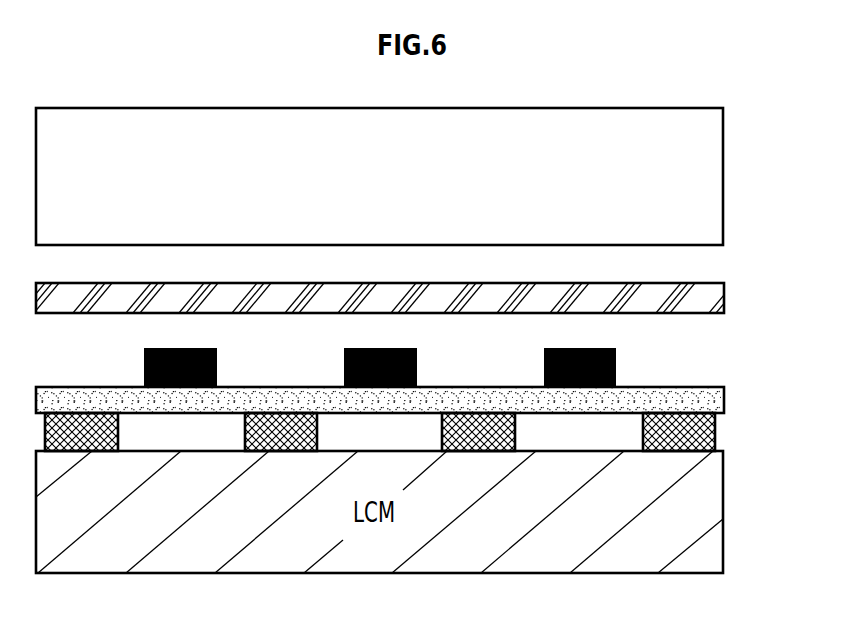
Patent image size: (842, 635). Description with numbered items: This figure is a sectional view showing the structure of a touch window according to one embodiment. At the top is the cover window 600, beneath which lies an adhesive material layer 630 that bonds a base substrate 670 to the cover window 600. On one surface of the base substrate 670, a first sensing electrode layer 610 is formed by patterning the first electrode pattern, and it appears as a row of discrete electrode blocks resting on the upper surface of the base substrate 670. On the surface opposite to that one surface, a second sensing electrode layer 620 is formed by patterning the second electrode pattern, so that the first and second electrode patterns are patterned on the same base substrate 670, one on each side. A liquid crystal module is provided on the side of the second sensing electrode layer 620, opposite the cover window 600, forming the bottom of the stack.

The cover window 600 is at (710, 172).
The adhesive material layer 630 is at (726, 298).
The first sensing electrode layer 610 is at (617, 371).
The base substrate 670 is at (713, 402).
The second sensing electrode layer 620 is at (716, 432).